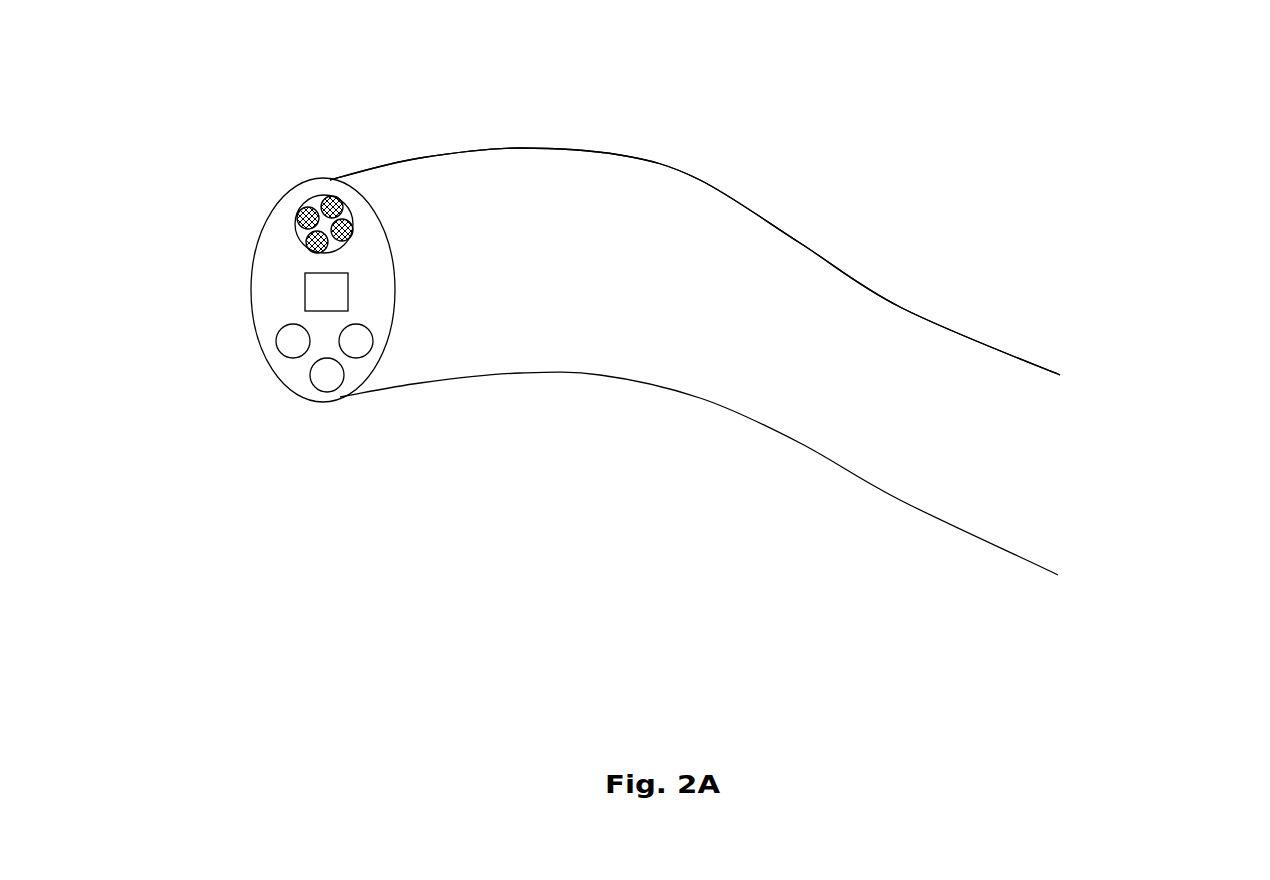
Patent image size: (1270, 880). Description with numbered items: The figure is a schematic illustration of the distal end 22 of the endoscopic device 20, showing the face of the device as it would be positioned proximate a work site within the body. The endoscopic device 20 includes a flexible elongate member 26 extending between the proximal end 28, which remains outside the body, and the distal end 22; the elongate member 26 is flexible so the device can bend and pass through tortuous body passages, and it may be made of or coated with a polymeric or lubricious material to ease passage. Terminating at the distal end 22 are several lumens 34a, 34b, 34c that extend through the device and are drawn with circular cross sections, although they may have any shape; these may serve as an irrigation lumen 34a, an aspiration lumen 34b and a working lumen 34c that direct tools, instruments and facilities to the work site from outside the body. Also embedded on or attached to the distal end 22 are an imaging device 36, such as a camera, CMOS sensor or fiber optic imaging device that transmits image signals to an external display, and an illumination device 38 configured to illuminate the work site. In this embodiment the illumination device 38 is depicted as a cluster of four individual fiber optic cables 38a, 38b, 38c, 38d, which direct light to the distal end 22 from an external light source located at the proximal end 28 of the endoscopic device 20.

The endoscopic device 20 is at (749, 298).
The distal end 22 is at (478, 104).
The flexible elongate member 26 is at (695, 261).
The proximal end 28 is at (1240, 550).
The irrigation lumen 34a is at (258, 378).
The aspiration lumen 34b is at (397, 378).
The working lumen 34c is at (327, 419).
The imaging device 36 is at (263, 305).
The illumination device 38 is at (218, 185).
The fiber optic cable 38a is at (239, 211).
The fiber optic cable 38b is at (245, 249).
The fiber optic cable 38c is at (343, 207).
The fiber optic cable 38d is at (318, 212).